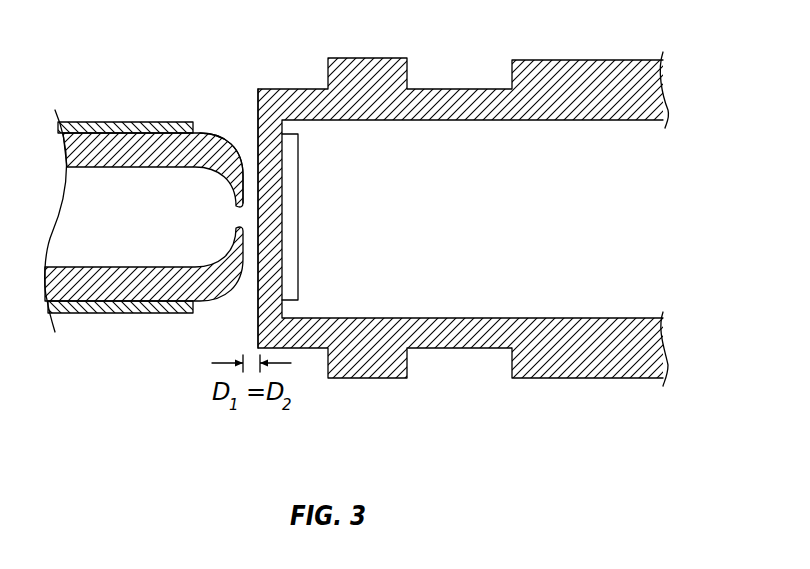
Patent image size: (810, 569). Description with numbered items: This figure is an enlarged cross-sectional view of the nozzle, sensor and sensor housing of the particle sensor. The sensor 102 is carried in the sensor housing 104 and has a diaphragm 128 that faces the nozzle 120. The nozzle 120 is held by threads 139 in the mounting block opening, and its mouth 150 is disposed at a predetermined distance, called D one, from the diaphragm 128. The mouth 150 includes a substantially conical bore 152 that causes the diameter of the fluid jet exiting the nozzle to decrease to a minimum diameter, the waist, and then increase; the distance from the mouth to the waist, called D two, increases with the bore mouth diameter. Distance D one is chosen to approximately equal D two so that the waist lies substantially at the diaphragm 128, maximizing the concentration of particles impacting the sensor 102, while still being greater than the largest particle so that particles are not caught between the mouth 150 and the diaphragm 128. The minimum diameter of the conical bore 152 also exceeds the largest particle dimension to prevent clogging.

The sensor housing 104 is at (566, 74).
The sensor 102 is at (287, 183).
The diaphragm 128 is at (270, 252).
The mouth 150 is at (229, 136).
The nozzle 120 is at (115, 158).
The conical bore 152 is at (140, 232).
The threads 139 is at (172, 305).